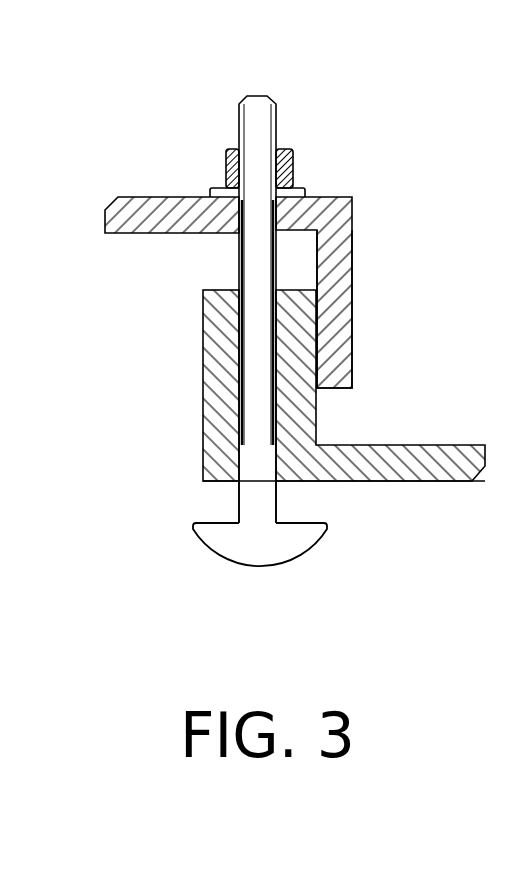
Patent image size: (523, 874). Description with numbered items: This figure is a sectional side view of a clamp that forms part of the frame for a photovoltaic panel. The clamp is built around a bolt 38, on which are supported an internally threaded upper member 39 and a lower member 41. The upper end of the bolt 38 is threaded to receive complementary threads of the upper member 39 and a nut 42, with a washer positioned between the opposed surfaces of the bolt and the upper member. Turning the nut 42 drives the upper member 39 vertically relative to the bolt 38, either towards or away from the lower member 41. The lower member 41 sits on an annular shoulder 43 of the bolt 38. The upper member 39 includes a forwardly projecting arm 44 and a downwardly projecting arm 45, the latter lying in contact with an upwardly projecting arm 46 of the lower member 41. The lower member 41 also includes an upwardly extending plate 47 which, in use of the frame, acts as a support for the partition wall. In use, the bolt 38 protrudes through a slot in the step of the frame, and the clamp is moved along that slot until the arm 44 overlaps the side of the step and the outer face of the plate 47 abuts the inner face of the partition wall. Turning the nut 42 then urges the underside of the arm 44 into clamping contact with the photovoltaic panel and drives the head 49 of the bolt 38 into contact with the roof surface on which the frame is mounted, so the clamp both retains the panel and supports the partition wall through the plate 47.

The bolt 38 is at (263, 132).
The nut 42 is at (292, 163).
The upper member 39 is at (352, 194).
The downwardly projecting arm 45 is at (352, 262).
The forwardly projecting arm 44 is at (140, 222).
The upwardly extending plate 47 is at (215, 357).
The upwardly projecting arm 46 is at (302, 416).
The lower member 41 is at (205, 481).
The annular shoulder 43 is at (240, 482).
The head 49 is at (302, 535).